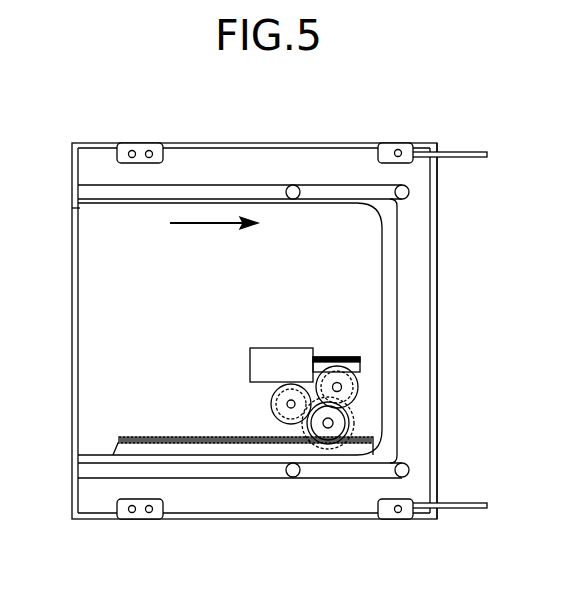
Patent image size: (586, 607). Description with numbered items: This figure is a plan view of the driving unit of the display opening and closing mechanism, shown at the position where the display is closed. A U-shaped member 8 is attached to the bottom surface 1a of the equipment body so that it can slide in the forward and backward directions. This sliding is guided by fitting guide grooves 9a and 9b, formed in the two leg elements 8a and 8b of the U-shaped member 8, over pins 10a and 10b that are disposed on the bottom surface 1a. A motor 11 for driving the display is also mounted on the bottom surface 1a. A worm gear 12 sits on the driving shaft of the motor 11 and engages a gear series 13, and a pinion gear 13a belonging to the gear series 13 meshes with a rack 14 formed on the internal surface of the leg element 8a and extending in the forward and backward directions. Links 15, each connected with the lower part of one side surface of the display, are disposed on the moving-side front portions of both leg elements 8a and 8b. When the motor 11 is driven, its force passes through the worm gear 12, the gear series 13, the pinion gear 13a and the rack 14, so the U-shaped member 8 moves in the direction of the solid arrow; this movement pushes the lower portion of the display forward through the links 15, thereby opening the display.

The bottom surface 1a is at (93, 300).
The U-shaped member 8 is at (417, 315).
The leg element 8a is at (183, 495).
The leg element 8b is at (187, 163).
The guide groove 9a is at (244, 468).
The guide groove 9b is at (241, 195).
The pin 10a is at (402, 477).
The pin 10b is at (403, 186).
The motor 11 is at (277, 353).
The worm gear 12 is at (338, 356).
The gear series 13 is at (272, 405).
The pinion gear 13a is at (349, 423).
The rack 14 is at (170, 437).
The link 15 is at (472, 152).